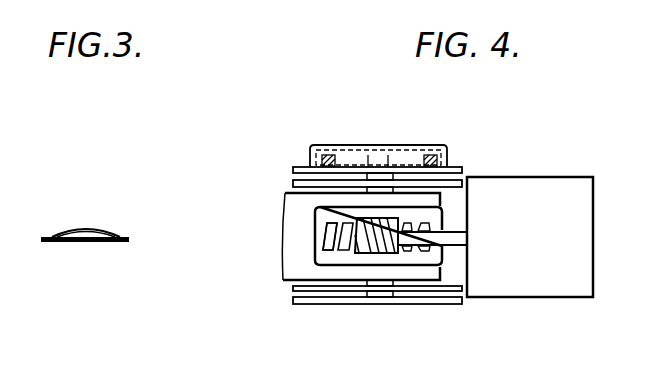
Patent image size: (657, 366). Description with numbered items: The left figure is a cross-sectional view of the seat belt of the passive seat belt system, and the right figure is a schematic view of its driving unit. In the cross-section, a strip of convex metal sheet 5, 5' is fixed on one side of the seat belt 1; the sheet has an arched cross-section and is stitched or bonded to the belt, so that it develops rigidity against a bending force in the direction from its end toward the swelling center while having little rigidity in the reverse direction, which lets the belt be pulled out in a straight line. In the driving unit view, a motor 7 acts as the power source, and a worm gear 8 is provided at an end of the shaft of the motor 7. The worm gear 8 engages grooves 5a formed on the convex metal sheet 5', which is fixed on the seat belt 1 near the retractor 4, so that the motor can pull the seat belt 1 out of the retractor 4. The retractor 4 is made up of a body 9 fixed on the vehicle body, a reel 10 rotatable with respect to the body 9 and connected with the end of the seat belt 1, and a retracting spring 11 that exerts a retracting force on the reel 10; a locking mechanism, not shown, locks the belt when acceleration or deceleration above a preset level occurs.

In FIG. 3, the seat belt 1 is at (44, 236).
In FIG. 4, the seat belt 1 is at (284, 272).
In FIG. 3, the convex metal sheet 5 is at (99, 216).
In FIG. 4, the convex metal sheet strip 5' is at (320, 280).
In FIG. 4, the grooves 5a is at (325, 236).
In FIG. 4, the retractor 4 is at (456, 156).
In FIG. 4, the motor 7 is at (576, 178).
In FIG. 4, the worm gear 8 is at (378, 254).
In FIG. 4, the body 9 is at (397, 304).
In FIG. 4, the reel 10 is at (430, 291).
In FIG. 4, the retracting spring 11 is at (346, 157).